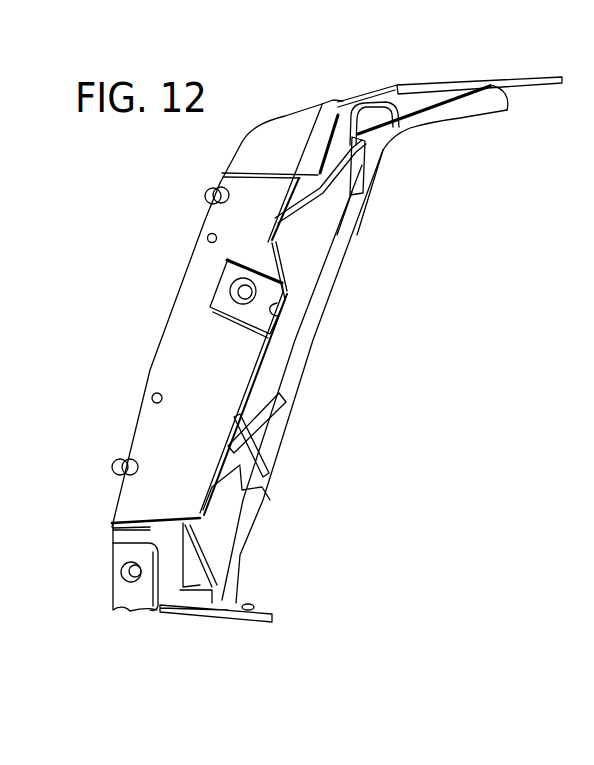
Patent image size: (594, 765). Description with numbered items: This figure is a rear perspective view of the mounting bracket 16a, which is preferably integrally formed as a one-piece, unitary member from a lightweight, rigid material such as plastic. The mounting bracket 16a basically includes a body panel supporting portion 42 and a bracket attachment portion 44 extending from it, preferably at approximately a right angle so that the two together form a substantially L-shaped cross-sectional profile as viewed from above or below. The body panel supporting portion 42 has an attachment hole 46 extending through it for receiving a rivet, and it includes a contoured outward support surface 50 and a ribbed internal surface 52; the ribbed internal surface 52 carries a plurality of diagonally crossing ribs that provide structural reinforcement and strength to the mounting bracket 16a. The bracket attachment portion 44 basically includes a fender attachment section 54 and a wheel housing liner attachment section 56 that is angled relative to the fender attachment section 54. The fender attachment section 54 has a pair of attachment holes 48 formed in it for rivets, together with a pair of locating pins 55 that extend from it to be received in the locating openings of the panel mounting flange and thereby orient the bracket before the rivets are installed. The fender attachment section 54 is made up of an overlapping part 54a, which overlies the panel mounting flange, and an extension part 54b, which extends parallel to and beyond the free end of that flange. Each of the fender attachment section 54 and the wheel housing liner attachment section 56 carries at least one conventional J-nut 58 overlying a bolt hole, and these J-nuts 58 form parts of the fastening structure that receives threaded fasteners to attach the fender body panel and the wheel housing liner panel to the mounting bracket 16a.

The mounting bracket 16a is at (449, 45).
The attachment hole 46 is at (528, 72).
The body panel supporting portion 42 is at (346, 262).
The overlapping part 54a is at (168, 357).
The extension part 54b is at (233, 358).
The contoured outward support surface 50 is at (270, 367).
The ribbed internal surface 52 is at (267, 418).
The locating pins 55 is at (206, 194).
The attachment holes 48 is at (208, 238).
The J-nut 58 is at (218, 297).
The wheel housing liner attachment section 56 is at (277, 620).
The fender attachment section 54 is at (207, 519).
The bracket attachment portion 44 is at (312, 540).